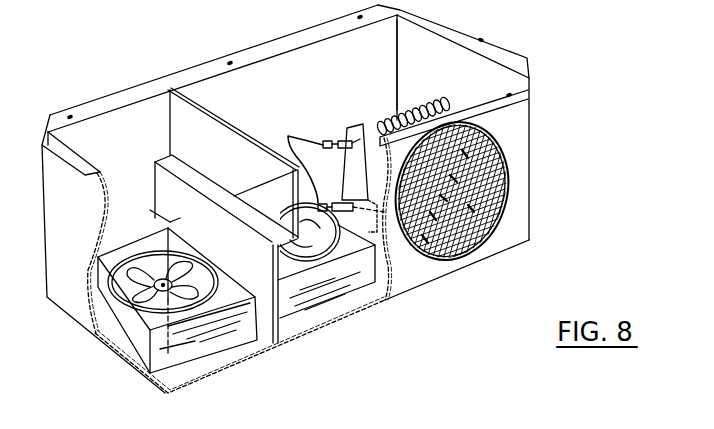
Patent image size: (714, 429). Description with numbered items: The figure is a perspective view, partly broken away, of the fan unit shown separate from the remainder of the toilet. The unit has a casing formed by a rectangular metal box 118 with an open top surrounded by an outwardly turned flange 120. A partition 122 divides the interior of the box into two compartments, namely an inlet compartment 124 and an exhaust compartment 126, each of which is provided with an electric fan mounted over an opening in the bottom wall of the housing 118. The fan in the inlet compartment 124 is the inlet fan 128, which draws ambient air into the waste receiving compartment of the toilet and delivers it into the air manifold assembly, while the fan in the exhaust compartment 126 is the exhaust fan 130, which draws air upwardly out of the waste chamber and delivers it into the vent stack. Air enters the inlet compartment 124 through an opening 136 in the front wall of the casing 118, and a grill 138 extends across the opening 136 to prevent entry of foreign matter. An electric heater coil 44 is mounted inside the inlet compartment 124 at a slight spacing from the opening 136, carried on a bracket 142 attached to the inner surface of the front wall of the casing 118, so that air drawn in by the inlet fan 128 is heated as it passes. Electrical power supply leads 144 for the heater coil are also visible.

The rectangular metal box 118 is at (514, 227).
The outwardly turned flange 120 is at (72, 157).
The partition 122 is at (282, 333).
The inlet compartment 124 is at (284, 93).
The exhaust compartment 126 is at (109, 122).
The inlet fan 128 is at (345, 278).
The exhaust fan 130 is at (220, 328).
The opening 136 is at (477, 248).
The grill 138 is at (499, 147).
The bracket 142 is at (364, 122).
The electrical power supply leads 144 is at (303, 137).
The electric heater coil 44 is at (497, 182).